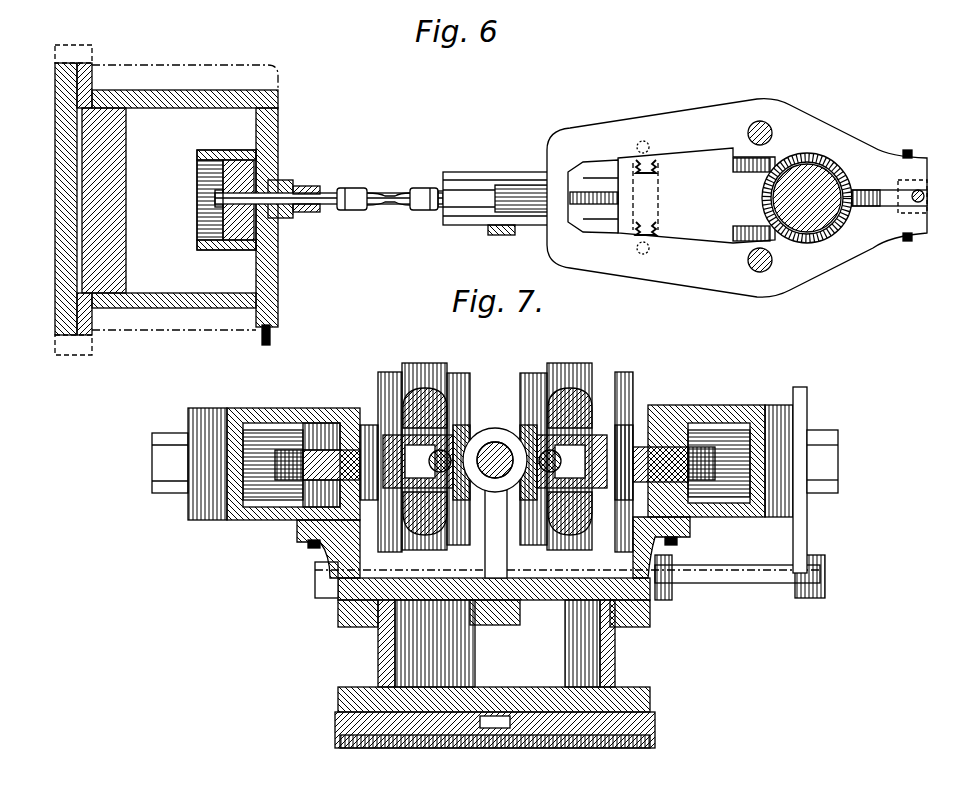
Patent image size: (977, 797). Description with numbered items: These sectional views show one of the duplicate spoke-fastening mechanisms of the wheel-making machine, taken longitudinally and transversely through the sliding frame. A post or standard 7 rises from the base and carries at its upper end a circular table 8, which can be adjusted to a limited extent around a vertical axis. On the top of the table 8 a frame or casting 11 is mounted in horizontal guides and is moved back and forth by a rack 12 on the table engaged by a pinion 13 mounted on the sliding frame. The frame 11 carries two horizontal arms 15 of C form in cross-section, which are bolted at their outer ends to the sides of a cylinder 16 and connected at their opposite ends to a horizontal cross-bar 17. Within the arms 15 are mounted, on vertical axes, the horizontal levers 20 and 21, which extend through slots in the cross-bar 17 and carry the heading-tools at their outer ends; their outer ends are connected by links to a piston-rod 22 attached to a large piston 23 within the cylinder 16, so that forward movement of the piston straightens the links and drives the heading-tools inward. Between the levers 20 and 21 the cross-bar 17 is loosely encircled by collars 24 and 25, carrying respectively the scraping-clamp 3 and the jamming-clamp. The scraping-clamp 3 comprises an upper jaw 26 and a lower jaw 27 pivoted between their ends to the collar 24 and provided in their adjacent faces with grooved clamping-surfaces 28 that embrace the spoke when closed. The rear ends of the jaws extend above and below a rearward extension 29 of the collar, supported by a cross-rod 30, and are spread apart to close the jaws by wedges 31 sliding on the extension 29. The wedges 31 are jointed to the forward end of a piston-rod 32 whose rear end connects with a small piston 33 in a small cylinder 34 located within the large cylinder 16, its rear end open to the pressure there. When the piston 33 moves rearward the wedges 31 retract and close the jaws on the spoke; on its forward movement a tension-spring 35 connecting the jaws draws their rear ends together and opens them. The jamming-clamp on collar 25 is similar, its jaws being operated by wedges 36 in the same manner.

In FIG. 6, the scraping-clamp 3 is at (916, 142).
In FIG. 7, the post or standard 7 is at (655, 732).
In FIG. 7, the circular table 8 is at (494, 656).
In FIG. 7, the sliding frame or casting 11 is at (660, 595).
In FIG. 7, the rack 12 is at (515, 625).
In FIG. 7, the pinion 13 is at (487, 557).
In FIG. 7, the horizontal arms 15 is at (255, 408).
In FIG. 6, the cylinder 16 is at (278, 112).
In FIG. 6, the horizontal cross-bar 17 is at (805, 210).
In FIG. 7, the horizontal cross-bar 17 is at (272, 482).
In FIG. 7, the horizontal lever 20 is at (650, 445).
In FIG. 7, the horizontal lever 21 is at (320, 450).
In FIG. 7, the piston-rod 22 is at (495, 445).
In FIG. 6, the large piston 23 is at (118, 199).
In FIG. 6, the collar 24 is at (818, 158).
In FIG. 7, the collar 24 is at (470, 428).
In FIG. 7, the collar 25 is at (518, 410).
In FIG. 6, the upper jaw 26 is at (928, 183).
In FIG. 6, the lower jaw 27 is at (928, 215).
In FIG. 6, the grooved clamping-surfaces 28 is at (925, 197).
In FIG. 6, the rearward extension 29 is at (696, 195).
In FIG. 7, the rearward extension 29 is at (380, 400).
In FIG. 6, the cross-rod 30 is at (500, 235).
In FIG. 6, the wedges 31 is at (603, 188).
In FIG. 7, the wedges 31 is at (445, 420).
In FIG. 6, the piston-rod 32 is at (330, 214).
In FIG. 6, the small piston 33 is at (242, 246).
In FIG. 6, the small cylinder 34 is at (205, 218).
In FIG. 6, the tension-spring 35 is at (655, 160).
In FIG. 7, the wedges 36 is at (562, 400).